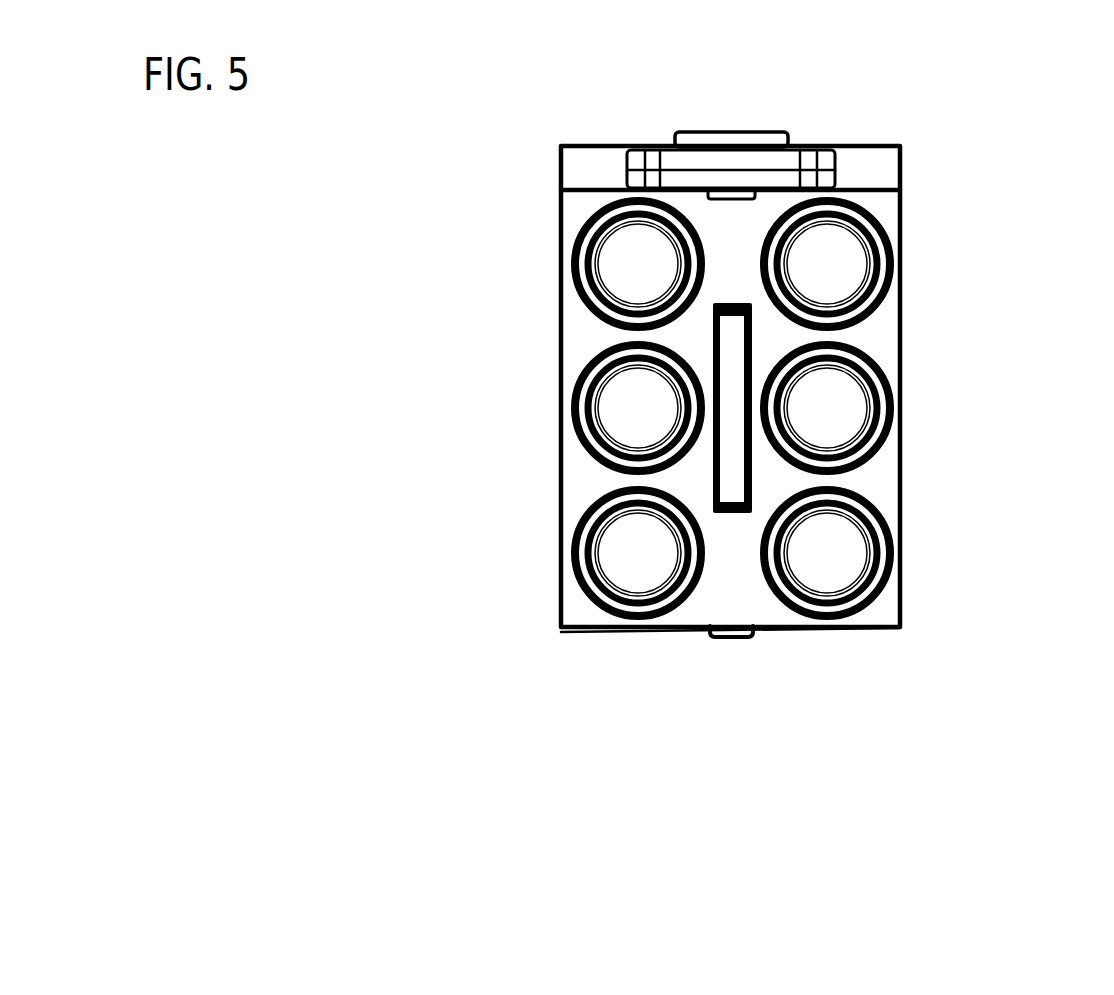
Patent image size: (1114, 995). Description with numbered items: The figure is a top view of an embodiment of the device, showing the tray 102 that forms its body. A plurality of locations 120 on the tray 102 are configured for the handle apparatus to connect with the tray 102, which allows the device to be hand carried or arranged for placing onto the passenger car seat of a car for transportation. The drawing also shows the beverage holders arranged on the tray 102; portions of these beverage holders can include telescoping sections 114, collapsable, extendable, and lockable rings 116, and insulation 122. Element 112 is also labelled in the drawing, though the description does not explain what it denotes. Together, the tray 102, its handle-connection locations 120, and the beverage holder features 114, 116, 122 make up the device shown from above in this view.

The tray 102 is at (905, 313).
The receptacle 112 is at (847, 230).
The telescoping sections 114 is at (594, 383).
The collapsable, extendable, and lockable rings 116 is at (593, 220).
The locations 120 is at (675, 158).
The insulation 122 is at (890, 533).